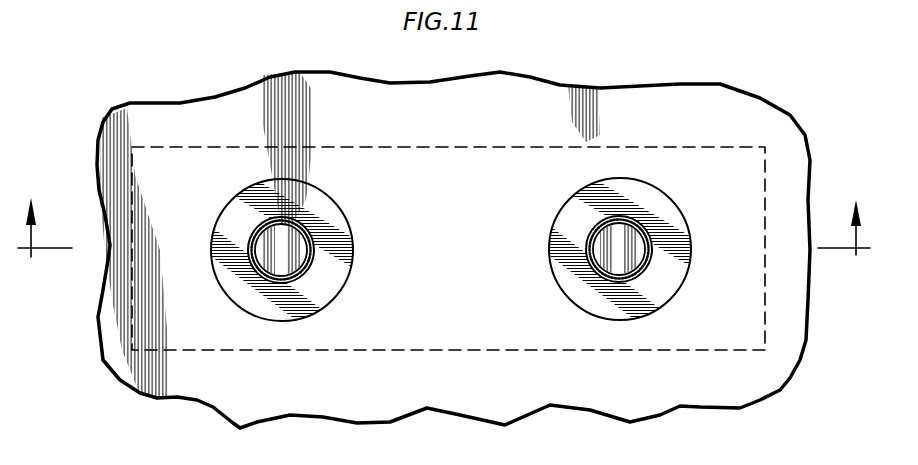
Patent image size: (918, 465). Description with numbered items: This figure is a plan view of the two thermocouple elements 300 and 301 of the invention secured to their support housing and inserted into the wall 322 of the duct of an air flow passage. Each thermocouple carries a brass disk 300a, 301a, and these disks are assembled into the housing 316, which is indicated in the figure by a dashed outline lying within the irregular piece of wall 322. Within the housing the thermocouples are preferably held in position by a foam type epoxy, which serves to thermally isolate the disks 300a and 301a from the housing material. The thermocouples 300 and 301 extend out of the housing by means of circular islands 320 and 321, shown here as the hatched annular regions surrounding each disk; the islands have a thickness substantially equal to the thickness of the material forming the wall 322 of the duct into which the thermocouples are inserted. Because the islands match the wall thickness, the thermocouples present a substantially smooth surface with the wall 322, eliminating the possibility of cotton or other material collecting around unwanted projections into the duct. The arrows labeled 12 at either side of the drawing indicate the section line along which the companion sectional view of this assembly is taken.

The section line 12- 12 is at (444, 214).
The thermocouple element 300 is at (314, 227).
The brass disk 300a is at (258, 243).
The thermocouple element 301 is at (653, 226).
The brass disk 301a is at (603, 238).
The housing 316 is at (473, 147).
The circular island 320 is at (323, 280).
The circular island 321 is at (578, 292).
The wall 322 is at (653, 105).